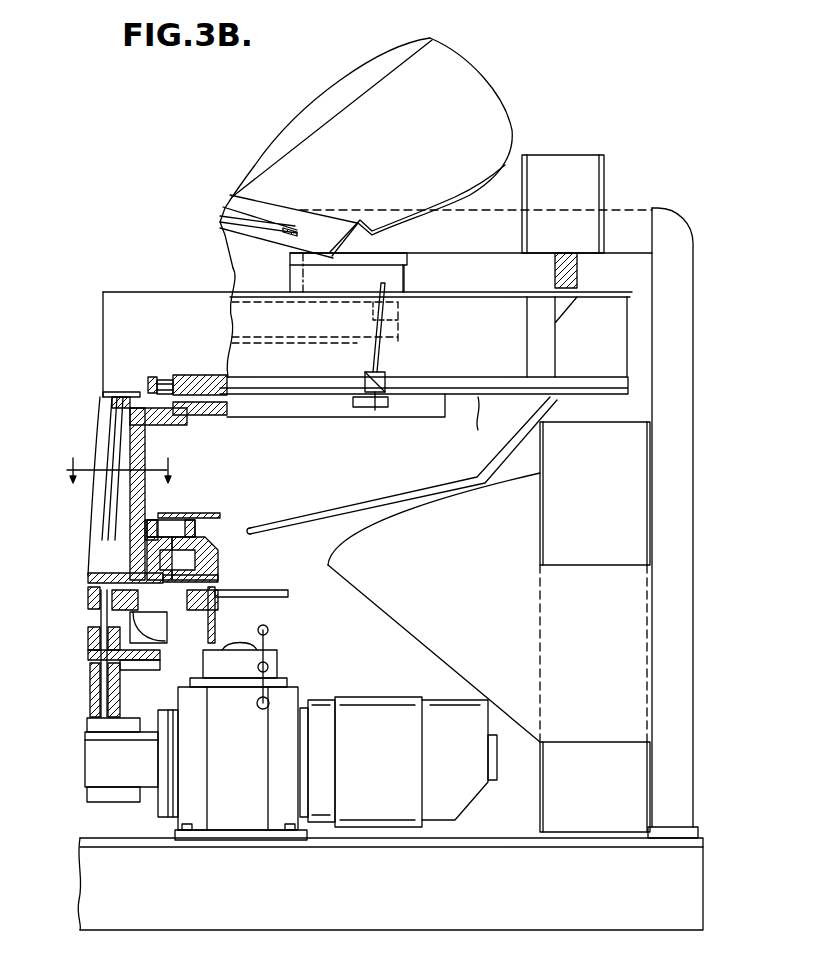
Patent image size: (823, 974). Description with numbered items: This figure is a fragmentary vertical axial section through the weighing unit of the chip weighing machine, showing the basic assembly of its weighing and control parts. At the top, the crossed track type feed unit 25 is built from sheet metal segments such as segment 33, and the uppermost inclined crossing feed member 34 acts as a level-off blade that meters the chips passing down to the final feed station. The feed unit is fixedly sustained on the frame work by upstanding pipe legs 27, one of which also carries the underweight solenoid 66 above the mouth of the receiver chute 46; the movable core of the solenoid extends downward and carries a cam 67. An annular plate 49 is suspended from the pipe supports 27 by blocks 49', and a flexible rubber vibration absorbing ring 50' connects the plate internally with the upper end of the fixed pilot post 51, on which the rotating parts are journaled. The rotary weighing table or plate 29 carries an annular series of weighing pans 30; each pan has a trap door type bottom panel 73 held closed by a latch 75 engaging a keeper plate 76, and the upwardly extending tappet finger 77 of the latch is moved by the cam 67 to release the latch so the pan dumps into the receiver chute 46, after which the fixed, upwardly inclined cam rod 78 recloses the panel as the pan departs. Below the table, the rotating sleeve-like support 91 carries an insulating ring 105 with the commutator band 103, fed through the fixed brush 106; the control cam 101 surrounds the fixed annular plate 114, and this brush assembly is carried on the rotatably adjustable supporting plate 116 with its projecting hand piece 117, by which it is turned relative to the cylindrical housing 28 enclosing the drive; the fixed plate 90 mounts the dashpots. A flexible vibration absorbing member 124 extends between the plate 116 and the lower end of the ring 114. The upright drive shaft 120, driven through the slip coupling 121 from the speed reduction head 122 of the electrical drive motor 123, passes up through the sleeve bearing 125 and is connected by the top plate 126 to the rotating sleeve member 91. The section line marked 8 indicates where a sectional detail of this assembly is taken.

The crossed track type feed unit 25 is at (470, 58).
The sheet metal segment 33 is at (487, 81).
The crossing feed member 34 is at (275, 212).
The underweight solenoid 66 is at (568, 170).
The cam 67 is at (562, 268).
The annular plate 49 is at (319, 297).
The blocks 49' is at (423, 276).
The weighing pan 30 is at (211, 310).
The upstanding pipe leg 27 is at (680, 357).
The flexible rubber vibration absorbing ring 50' is at (187, 371).
The tappet finger 77 is at (387, 333).
The latch 75 is at (385, 373).
The keeper plate 76 is at (370, 407).
The fixed pilot post 51 is at (103, 437).
The rotating sleeve-like support 91 is at (145, 440).
The rotary weighing table or plate 29 is at (266, 412).
The trap door type bottom panel 73 is at (478, 426).
The cam rod 78 is at (390, 500).
The receiver chute 46 is at (625, 515).
The section line 8 is at (118, 470).
The fixed brush 106 is at (188, 516).
The fixed plate 90 is at (205, 502).
The insulating ring 105 is at (127, 540).
The commutator band 103 is at (171, 528).
The control cam 101 is at (218, 541).
The fixed annular plate 114 is at (218, 580).
The hand piece 117 is at (285, 590).
The top plate 126 is at (88, 578).
The sleeve bearing 125 is at (90, 597).
The rotatably adjustable supporting plate 116 is at (88, 610).
The flexible vibration absorbing member 124 is at (190, 592).
The cylindrical housing 28 is at (215, 628).
The slip coupling 121 is at (88, 652).
The upright drive shaft 120 is at (92, 700).
The speed reduction head 122 is at (95, 770).
The electrical drive motor 123 is at (185, 800).